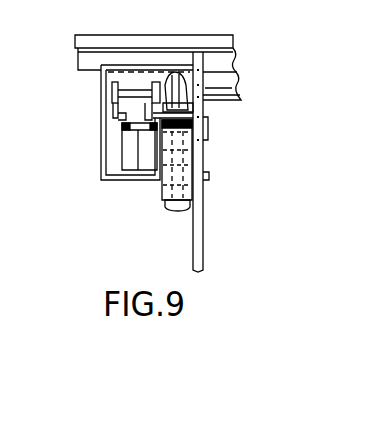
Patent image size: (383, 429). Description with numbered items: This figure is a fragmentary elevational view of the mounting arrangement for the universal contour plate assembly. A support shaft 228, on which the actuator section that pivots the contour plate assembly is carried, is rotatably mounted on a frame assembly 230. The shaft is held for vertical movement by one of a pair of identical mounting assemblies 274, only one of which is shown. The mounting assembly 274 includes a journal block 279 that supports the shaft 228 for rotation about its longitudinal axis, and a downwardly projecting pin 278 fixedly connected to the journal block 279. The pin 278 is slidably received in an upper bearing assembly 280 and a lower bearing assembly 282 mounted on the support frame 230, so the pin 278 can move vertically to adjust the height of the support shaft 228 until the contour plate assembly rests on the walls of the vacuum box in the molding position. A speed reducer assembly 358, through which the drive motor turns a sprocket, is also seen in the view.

The support shaft 228 is at (237, 100).
The frame assembly 230 is at (203, 229).
The mounting assembly 274 is at (206, 176).
The pin 278 is at (165, 190).
The journal block 279 is at (172, 85).
The bearing assembly 280 is at (208, 130).
The bearing assembly 282 is at (210, 190).
The speed reducer assembly 358 is at (132, 148).